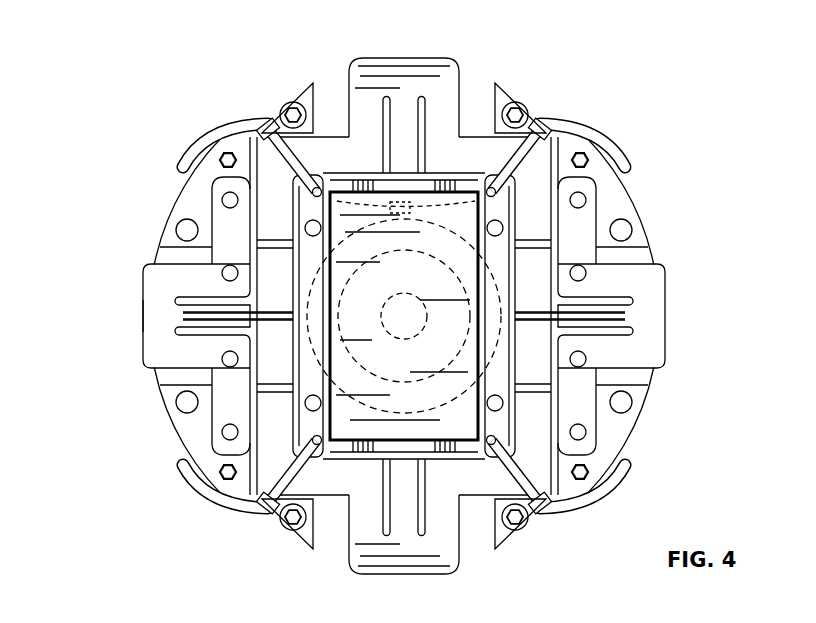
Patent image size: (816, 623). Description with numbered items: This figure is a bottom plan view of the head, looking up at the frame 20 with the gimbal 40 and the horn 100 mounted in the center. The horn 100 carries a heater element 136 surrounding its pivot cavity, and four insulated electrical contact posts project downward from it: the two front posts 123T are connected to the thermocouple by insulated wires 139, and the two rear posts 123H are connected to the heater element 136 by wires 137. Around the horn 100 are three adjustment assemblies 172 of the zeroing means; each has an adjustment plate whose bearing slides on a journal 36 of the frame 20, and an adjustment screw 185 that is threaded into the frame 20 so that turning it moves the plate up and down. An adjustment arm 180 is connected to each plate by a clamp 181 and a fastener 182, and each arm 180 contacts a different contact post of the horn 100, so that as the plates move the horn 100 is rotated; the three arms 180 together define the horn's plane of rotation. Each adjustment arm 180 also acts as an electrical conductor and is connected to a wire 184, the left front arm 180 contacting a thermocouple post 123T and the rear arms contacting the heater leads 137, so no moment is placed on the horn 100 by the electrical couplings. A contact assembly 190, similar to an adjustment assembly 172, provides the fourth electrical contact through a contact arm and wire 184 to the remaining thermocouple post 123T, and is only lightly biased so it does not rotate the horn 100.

The frame 20 is at (160, 378).
The journal 36 is at (186, 231).
The gimbal 40 is at (122, 350).
The horn 100 is at (330, 232).
The front contact posts 123T is at (318, 188).
The rear contact posts 123H is at (318, 440).
The heater element 136 is at (337, 316).
The heater wires 137 is at (470, 428).
The insulated wires 139 is at (373, 191).
The adjustment assembly 172 is at (152, 163).
The adjustment arm 180 is at (347, 500).
The clamp 181 is at (291, 103).
The fastener 182 is at (264, 121).
The wire 184 is at (204, 131).
The adjustment screw 185 is at (222, 172).
The contact assembly 190 is at (545, 77).